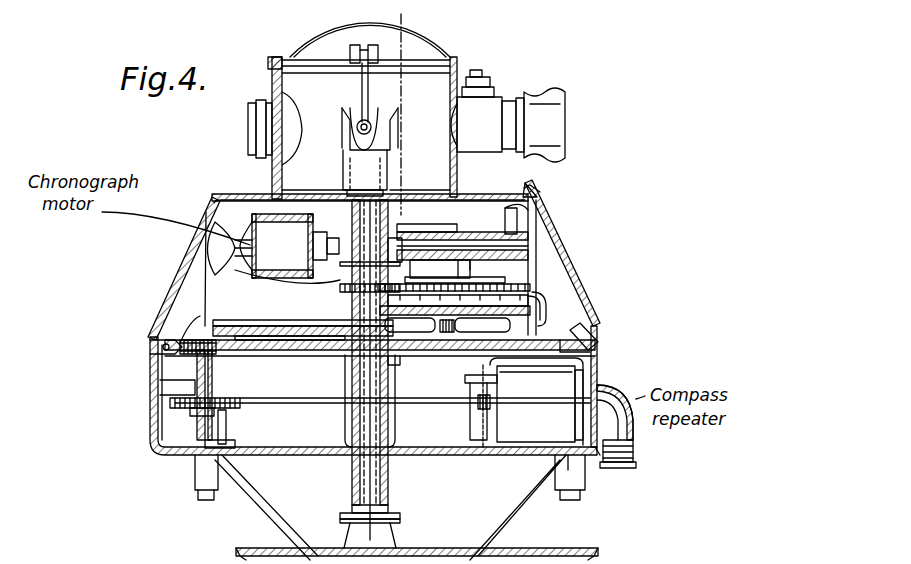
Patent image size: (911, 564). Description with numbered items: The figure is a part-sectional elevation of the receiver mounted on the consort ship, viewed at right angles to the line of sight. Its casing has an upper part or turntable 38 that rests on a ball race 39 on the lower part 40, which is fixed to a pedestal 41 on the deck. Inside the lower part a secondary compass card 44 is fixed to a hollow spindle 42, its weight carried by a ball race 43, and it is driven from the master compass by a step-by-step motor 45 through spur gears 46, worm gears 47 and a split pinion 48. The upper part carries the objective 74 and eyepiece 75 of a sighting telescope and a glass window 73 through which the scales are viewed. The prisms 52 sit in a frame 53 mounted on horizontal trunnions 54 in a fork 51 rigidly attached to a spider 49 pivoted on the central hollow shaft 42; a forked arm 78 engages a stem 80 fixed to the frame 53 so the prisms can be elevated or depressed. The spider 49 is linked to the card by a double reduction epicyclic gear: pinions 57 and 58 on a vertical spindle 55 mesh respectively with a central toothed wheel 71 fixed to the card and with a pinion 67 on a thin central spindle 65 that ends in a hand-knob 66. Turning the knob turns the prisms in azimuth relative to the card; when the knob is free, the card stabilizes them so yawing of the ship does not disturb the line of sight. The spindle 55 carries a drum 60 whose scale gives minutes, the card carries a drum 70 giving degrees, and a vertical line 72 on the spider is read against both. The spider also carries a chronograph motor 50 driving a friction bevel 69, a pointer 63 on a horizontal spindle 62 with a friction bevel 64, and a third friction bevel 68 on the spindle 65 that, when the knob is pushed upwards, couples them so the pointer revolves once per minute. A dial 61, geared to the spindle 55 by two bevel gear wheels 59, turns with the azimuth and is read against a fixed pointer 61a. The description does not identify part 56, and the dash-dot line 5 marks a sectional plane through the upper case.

The section line 5- 5 is at (411, 110).
The upper part or turntable 38 is at (215, 196).
The ball race 39 is at (150, 350).
The lower part 40 is at (150, 441).
The pedestal 41 is at (300, 559).
The hollow spindle 42 is at (356, 470).
The ball race 43 is at (392, 366).
The secondary compass card 44 is at (272, 350).
The step-by-step motor 45 is at (575, 460).
The spur gears 46 is at (580, 470).
The worm gears 47 is at (170, 404).
The split pinion 48 is at (175, 320).
The spider 49 is at (350, 325).
The chronograph motor 50 is at (262, 228).
The fork 51 is at (352, 192).
The prisms 52 is at (370, 176).
The frame 53 is at (368, 140).
The horizontal trunnions 54 is at (470, 96).
The vertical spindle 55 is at (535, 286).
The housing corner 56 is at (540, 193).
The epicyclic pinion 57 is at (515, 372).
The epicyclic pinion 58 is at (545, 296).
The bevel gear wheels 59 is at (610, 282).
The drum 60 is at (555, 316).
The dial 61 is at (530, 222).
The fixed pointer 61a is at (560, 310).
The horizontal spindle 62 is at (540, 250).
The pointer 63 is at (535, 234).
The friction bevel 64 is at (460, 196).
The thin central spindle 65 is at (216, 203).
The hand-knob 66 is at (342, 516).
The pinion 67 is at (345, 290).
The third friction bevel 68 is at (292, 277).
The friction bevel 69 is at (265, 240).
The drum 70 is at (580, 350).
The central toothed wheel 71 is at (505, 385).
The vertical line 72 is at (585, 332).
The glass window 73 is at (560, 238).
The objective 74 is at (250, 130).
The eyepiece 75 is at (510, 126).
The forked arm 78 is at (378, 52).
The stem 80 is at (372, 126).